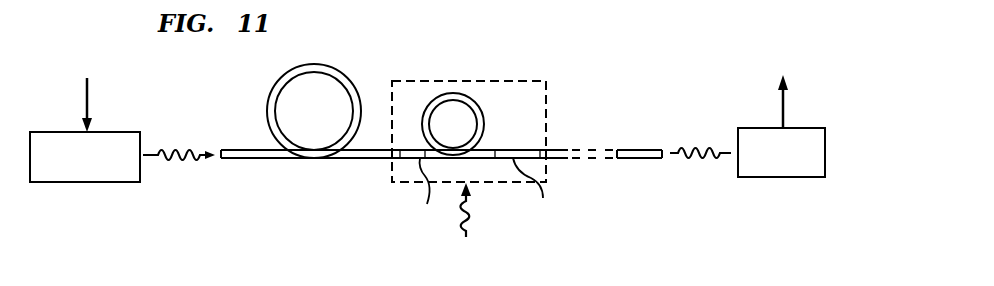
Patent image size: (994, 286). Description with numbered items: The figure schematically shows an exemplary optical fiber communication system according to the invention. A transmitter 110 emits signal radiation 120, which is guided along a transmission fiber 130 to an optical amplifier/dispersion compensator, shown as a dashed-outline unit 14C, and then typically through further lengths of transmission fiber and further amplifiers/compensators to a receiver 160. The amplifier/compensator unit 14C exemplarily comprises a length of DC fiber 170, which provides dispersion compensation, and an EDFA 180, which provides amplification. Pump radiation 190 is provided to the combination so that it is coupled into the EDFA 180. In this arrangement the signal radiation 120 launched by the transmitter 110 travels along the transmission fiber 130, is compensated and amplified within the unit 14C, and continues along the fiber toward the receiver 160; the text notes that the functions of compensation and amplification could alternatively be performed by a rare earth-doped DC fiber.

The transmitter 110 is at (111, 132).
The signal radiation 120 is at (176, 144).
The transmission fiber 130 is at (363, 161).
The fiber optic sensor section 14C is at (513, 49).
The receiver 160 is at (803, 128).
The DC fiber 170 is at (425, 196).
The EDFA 180 is at (537, 189).
The pump radiation 190 is at (477, 212).